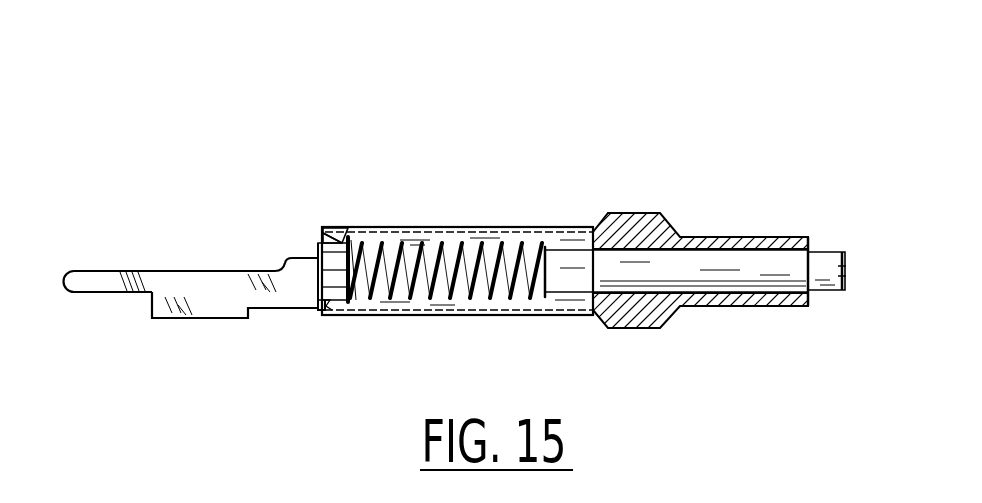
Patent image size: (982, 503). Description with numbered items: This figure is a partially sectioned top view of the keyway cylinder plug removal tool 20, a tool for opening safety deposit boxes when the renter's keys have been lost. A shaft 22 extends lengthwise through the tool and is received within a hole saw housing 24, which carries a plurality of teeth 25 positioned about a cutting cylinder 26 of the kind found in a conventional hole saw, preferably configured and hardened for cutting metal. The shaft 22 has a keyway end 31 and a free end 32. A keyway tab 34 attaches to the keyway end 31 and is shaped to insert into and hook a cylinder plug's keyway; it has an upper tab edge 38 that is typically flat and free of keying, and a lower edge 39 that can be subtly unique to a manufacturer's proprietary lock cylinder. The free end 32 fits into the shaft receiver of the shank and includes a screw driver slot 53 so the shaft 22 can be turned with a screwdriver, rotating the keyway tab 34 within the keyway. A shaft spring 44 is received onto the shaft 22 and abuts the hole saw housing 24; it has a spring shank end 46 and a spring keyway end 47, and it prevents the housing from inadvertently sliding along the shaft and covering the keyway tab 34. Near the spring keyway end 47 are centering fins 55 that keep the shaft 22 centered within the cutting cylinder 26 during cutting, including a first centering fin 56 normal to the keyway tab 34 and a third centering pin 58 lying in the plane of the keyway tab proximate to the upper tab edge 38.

The removal tool 20 is at (552, 128).
The shaft 22 is at (690, 265).
The hole saw housing 24 is at (577, 166).
The teeth 25 is at (317, 317).
The cutting cylinder 26 is at (420, 228).
The keyway end 31 is at (320, 242).
The free end 32 is at (845, 252).
The keyway tab 34 is at (202, 280).
The upper tab edge 38 is at (133, 270).
The lower edge 39 is at (178, 318).
The shaft spring 44 is at (492, 268).
The spring shank end 46 is at (541, 268).
The spring keyway end 47 is at (358, 262).
The screw driver slot 53 is at (838, 278).
The centering fins 55 is at (191, 248).
The first centering fin 56 is at (316, 286).
The third centering pin 58 is at (320, 247).